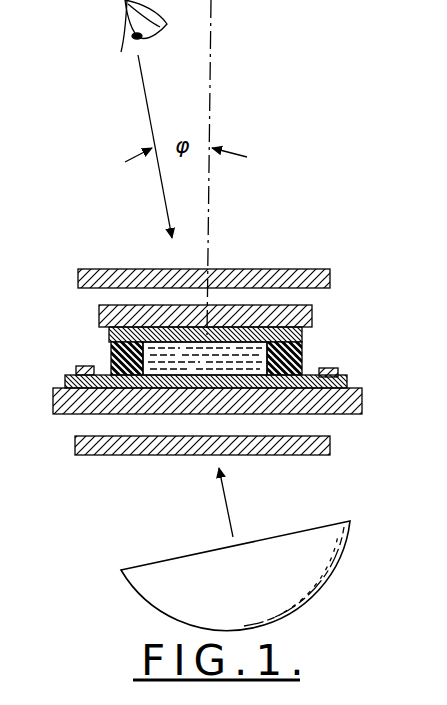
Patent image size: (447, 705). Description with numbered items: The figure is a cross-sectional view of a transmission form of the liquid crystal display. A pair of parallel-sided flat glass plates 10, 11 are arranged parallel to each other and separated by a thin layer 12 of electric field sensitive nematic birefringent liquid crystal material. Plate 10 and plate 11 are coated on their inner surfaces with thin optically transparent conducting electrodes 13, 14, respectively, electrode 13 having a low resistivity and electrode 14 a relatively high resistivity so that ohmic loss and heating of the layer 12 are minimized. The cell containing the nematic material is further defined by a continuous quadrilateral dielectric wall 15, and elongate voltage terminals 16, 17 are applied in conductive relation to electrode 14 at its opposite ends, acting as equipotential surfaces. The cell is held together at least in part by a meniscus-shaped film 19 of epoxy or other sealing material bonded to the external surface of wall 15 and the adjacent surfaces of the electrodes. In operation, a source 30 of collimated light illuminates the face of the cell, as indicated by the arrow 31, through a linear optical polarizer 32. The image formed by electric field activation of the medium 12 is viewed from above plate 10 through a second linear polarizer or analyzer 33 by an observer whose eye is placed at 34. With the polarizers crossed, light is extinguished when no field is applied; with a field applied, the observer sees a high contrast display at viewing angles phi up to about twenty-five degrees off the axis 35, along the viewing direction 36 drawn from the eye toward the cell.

The glass plate 10 is at (227, 306).
The glass plate 11 is at (362, 406).
The liquid crystal layer 12 is at (205, 358).
The conducting electrode 13 is at (304, 335).
The conducting electrode 14 is at (348, 383).
The dielectric wall 15 is at (301, 360).
The voltage terminal 16 is at (339, 372).
The voltage terminal 17 is at (78, 368).
The sealing film 19 is at (112, 374).
The light source 30 is at (340, 562).
The arrow 31 is at (226, 507).
The linear optical polarizer 32 is at (90, 456).
The linear polarizer or analyzer 33 is at (312, 269).
The observer eye 34 is at (126, 33).
The axis 35 is at (210, 90).
The viewing direction 36 is at (153, 128).